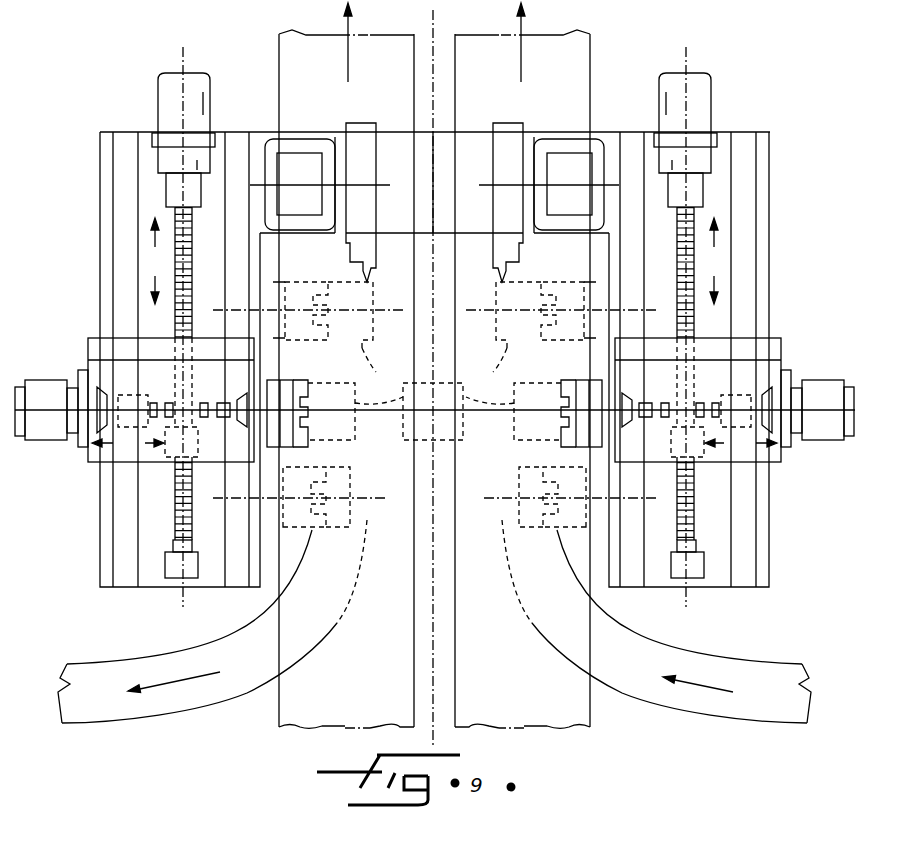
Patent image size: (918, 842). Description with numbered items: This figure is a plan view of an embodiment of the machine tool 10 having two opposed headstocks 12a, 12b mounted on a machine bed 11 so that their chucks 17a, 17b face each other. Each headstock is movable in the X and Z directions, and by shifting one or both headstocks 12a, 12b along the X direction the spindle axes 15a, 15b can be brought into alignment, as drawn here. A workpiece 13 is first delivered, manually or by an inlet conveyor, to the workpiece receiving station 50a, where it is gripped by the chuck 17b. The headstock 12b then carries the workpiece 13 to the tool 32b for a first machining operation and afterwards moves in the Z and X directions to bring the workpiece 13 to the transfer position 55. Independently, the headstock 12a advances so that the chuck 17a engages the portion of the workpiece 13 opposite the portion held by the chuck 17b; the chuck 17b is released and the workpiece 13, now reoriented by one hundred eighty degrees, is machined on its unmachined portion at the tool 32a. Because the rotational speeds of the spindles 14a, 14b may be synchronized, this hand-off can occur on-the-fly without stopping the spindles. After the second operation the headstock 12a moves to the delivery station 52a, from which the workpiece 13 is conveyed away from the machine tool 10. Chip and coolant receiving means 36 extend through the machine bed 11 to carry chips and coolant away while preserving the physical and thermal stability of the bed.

The machine tool 10 is at (122, 88).
The machine bed 11 is at (100, 190).
The headstock 12a is at (103, 368).
The headstock 12b is at (750, 360).
The workpiece 13 is at (507, 480).
The spindle 14a is at (262, 402).
The spindle 14b is at (605, 395).
The spindle axis 15a is at (40, 410).
The spindle axis 15b is at (835, 410).
The chuck 17a is at (300, 265).
The chuck 17b is at (578, 278).
The tool 32a is at (372, 275).
The tool 32b is at (497, 275).
The chip and coolant receiving means 36 is at (262, 728).
The workpiece receiving station 50a is at (488, 512).
The delivery station 52a is at (352, 542).
The transfer position 55 is at (440, 383).